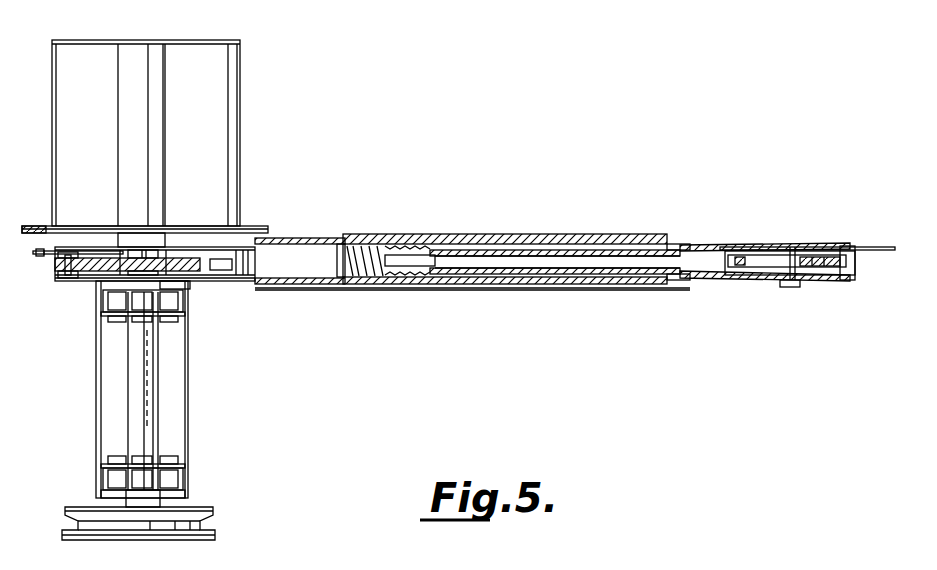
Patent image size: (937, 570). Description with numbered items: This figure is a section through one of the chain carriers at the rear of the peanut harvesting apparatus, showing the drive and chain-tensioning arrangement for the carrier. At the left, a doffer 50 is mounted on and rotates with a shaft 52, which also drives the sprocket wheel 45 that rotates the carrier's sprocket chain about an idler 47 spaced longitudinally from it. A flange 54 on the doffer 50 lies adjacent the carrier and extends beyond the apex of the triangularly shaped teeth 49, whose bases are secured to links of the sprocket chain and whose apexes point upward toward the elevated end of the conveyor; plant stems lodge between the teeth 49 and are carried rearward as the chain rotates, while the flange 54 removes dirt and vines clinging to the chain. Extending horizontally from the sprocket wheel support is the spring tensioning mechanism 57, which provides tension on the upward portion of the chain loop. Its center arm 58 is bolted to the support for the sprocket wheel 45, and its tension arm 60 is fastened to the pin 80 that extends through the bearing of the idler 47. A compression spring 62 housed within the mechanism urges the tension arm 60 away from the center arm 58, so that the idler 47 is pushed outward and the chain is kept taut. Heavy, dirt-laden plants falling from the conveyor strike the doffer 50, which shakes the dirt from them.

The doffer 50 is at (210, 92).
The flange 54 is at (244, 226).
The sprocket wheel 45 is at (200, 262).
The triangularly shaped tooth 49 is at (40, 258).
The shaft 52 is at (150, 378).
The center arm 58 is at (300, 284).
The spring tensioning mechanism 57 is at (510, 284).
The compression spring 62 is at (372, 270).
The tension arm 60 is at (733, 245).
The idler 47 is at (820, 257).
The pin 80 is at (790, 287).